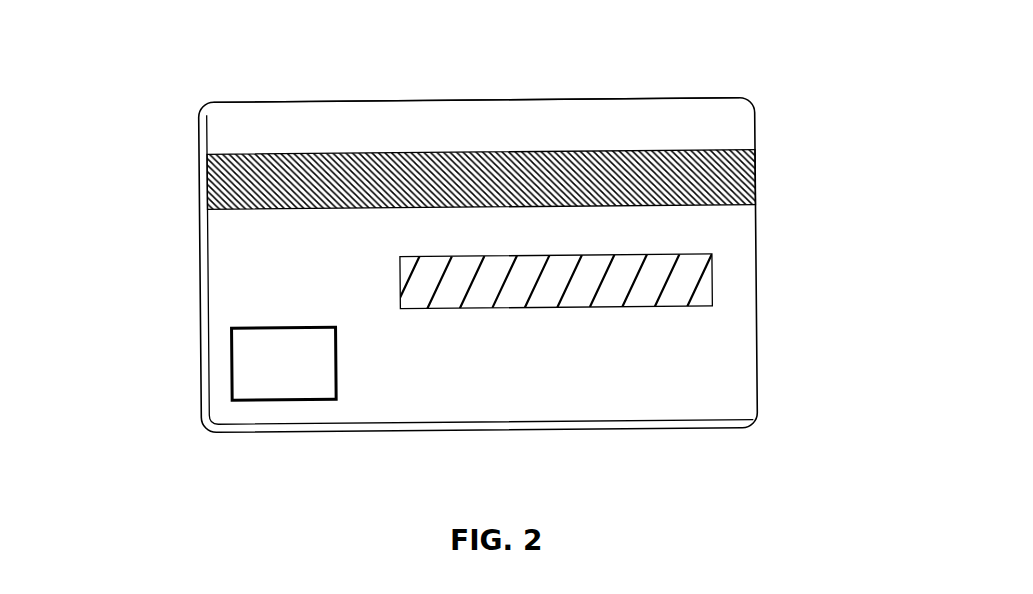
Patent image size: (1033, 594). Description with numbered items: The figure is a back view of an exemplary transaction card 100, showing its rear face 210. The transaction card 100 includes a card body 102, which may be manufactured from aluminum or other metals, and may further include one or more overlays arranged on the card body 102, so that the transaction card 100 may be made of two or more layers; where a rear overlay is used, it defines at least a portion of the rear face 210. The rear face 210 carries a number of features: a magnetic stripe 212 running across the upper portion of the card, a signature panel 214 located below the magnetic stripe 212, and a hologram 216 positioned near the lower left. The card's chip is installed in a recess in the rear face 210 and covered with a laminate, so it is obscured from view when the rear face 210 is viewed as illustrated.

The transaction card 100 is at (436, 83).
The card body 102 is at (177, 243).
The rear face 210 is at (740, 122).
The magnetic stripe 212 is at (755, 175).
The signature panel 214 is at (695, 279).
The hologram 216 is at (248, 370).